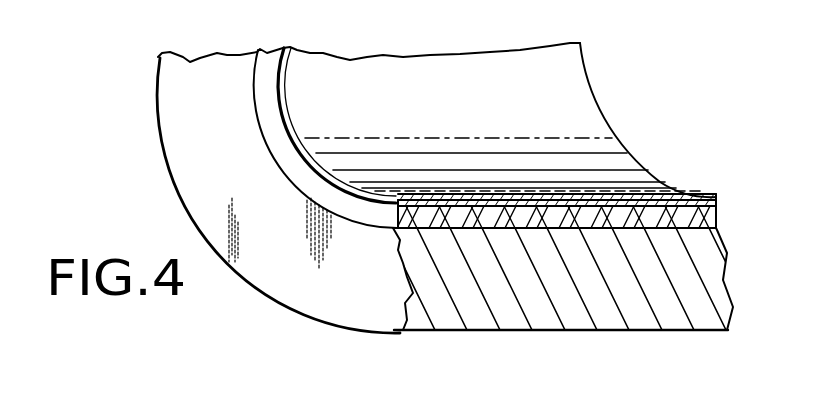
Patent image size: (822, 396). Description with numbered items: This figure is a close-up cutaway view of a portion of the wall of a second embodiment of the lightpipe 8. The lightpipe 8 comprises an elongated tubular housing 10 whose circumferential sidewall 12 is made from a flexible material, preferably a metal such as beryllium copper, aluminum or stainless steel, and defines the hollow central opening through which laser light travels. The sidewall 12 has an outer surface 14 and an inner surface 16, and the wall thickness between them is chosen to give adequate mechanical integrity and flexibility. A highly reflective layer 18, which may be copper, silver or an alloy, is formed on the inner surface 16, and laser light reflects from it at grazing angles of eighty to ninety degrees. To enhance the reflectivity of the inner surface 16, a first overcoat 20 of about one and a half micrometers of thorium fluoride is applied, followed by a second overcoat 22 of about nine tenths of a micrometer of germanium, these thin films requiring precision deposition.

The lightpipe 8 is at (655, 92).
The elongated tubular housing 10 is at (267, 293).
The circumferential sidewall 12 is at (570, 295).
The outer surface 14 is at (674, 330).
The inner surface 16 is at (262, 139).
The highly reflective layer 18 is at (713, 206).
The first overcoat 20 is at (434, 197).
The second overcoat 22 is at (517, 197).